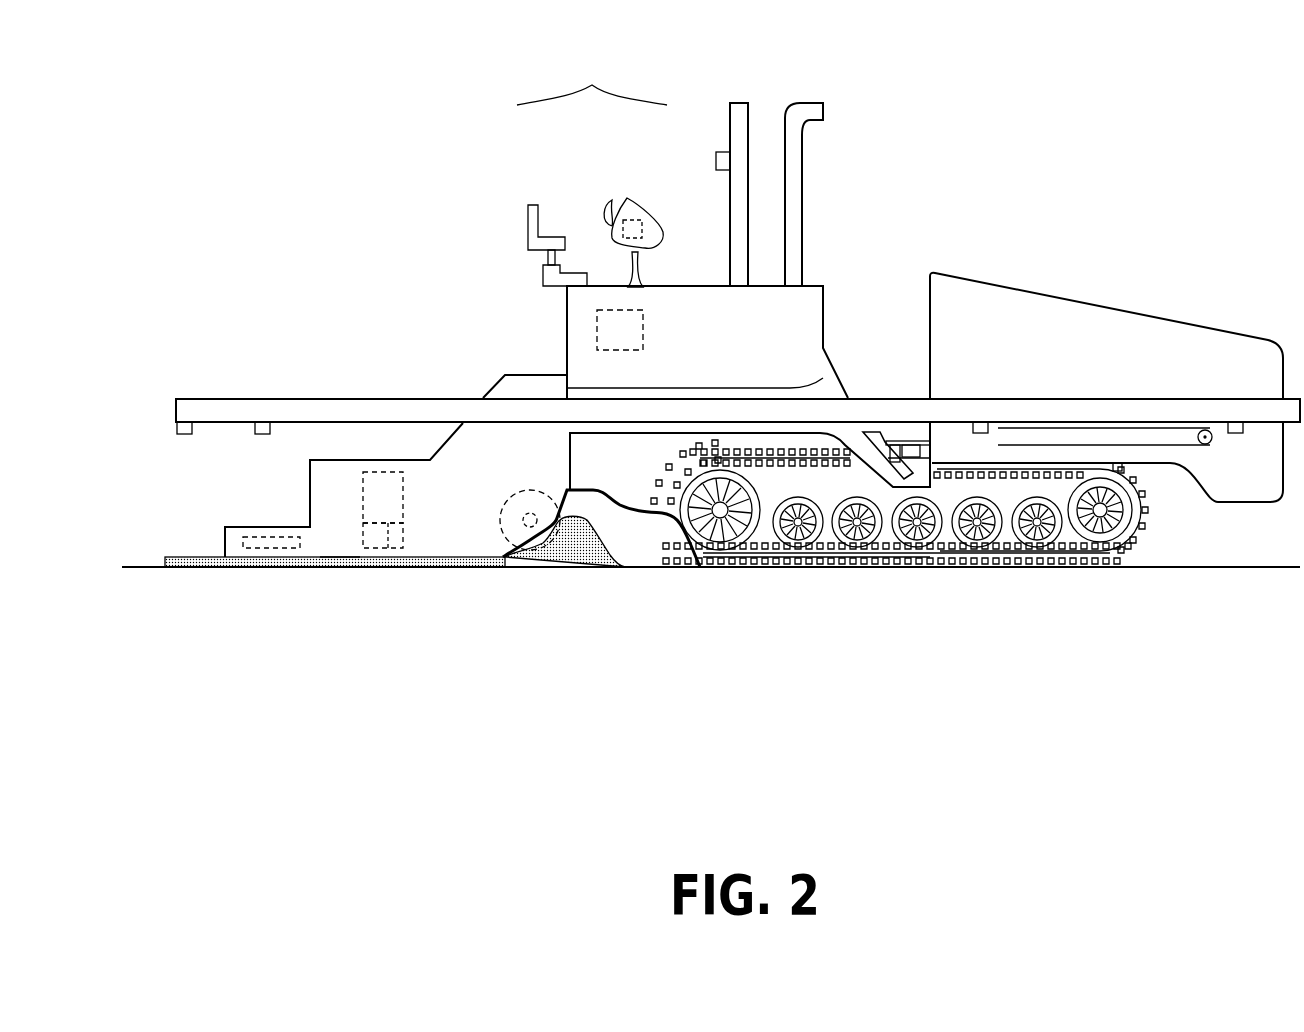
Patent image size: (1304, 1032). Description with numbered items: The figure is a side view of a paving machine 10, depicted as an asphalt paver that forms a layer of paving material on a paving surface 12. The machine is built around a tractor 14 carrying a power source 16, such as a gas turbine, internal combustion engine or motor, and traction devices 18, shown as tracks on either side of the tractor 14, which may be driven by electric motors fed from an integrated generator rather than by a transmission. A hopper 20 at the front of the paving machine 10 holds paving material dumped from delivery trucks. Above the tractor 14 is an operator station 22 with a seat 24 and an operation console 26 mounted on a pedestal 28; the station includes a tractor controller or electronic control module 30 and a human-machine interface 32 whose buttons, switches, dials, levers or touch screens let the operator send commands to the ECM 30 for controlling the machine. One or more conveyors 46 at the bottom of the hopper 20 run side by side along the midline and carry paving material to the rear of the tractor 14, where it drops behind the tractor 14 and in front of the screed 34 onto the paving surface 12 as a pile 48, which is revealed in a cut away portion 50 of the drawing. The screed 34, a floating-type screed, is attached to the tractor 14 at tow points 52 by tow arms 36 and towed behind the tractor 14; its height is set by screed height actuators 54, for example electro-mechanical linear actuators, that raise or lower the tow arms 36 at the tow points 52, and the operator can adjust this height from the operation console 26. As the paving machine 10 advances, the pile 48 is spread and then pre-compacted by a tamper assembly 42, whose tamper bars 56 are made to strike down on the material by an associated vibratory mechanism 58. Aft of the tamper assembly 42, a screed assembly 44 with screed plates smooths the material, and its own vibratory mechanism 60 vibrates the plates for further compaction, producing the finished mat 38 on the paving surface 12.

The paving machine 10 is at (1078, 108).
The paving surface 12 is at (150, 566).
The tractor 14 is at (567, 345).
The power source 16 is at (753, 343).
The traction devices 18 is at (1148, 530).
The hopper 20 is at (1215, 358).
The operator station 22 is at (592, 80).
The seat 24 is at (528, 223).
The operation console 26 is at (646, 193).
The pedestal 28 is at (644, 267).
The tractor controller or electronic control module (ECM) 30 is at (645, 224).
The human-machine interface 32 is at (617, 330).
The screed 34 is at (217, 519).
The tow arms 36 is at (888, 474).
The mat 38 is at (240, 562).
The tamper assembly 42 is at (403, 537).
The screed assembly 44 is at (340, 547).
The conveyors 46 is at (1222, 448).
The pile 48 is at (573, 552).
The cut away portion 50 is at (678, 578).
The tow points 52 is at (897, 453).
The screed height actuators 54 is at (907, 484).
The tamper bars 56 is at (390, 550).
The vibratory mechanism 58 is at (363, 498).
The vibratory mechanism 60 is at (270, 548).